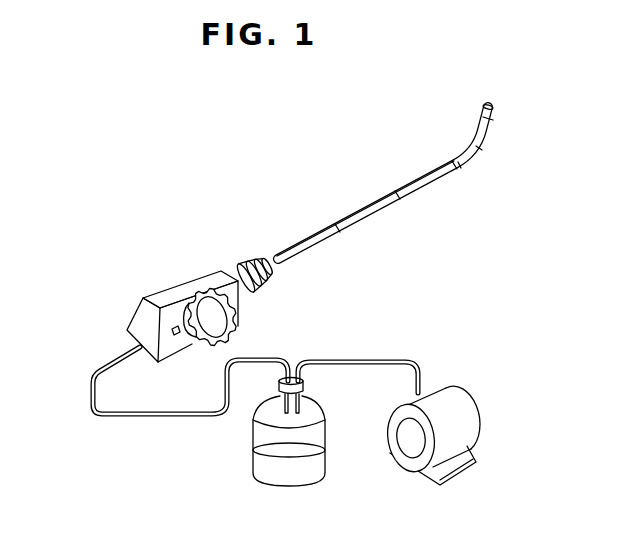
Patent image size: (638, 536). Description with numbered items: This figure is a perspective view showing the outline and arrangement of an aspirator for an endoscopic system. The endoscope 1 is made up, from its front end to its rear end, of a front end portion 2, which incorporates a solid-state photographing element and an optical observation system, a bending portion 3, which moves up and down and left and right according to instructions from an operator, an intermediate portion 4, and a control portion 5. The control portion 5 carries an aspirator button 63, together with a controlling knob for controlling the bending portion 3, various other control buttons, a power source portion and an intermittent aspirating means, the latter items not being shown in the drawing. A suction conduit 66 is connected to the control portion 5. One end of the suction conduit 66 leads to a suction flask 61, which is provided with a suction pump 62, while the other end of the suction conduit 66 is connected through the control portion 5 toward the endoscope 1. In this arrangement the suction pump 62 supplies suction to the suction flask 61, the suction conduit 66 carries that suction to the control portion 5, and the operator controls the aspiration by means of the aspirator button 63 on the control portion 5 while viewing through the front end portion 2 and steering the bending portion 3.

The endoscope 1 is at (342, 198).
The front end portion 2 is at (494, 113).
The bending portion 3 is at (489, 144).
The intermediate portion 4 is at (406, 194).
The control portion 5 is at (208, 277).
The suction flask 61 is at (262, 436).
The suction pump 62 is at (458, 424).
The aspirator button 63 is at (172, 326).
The suction conduit 66 is at (91, 369).